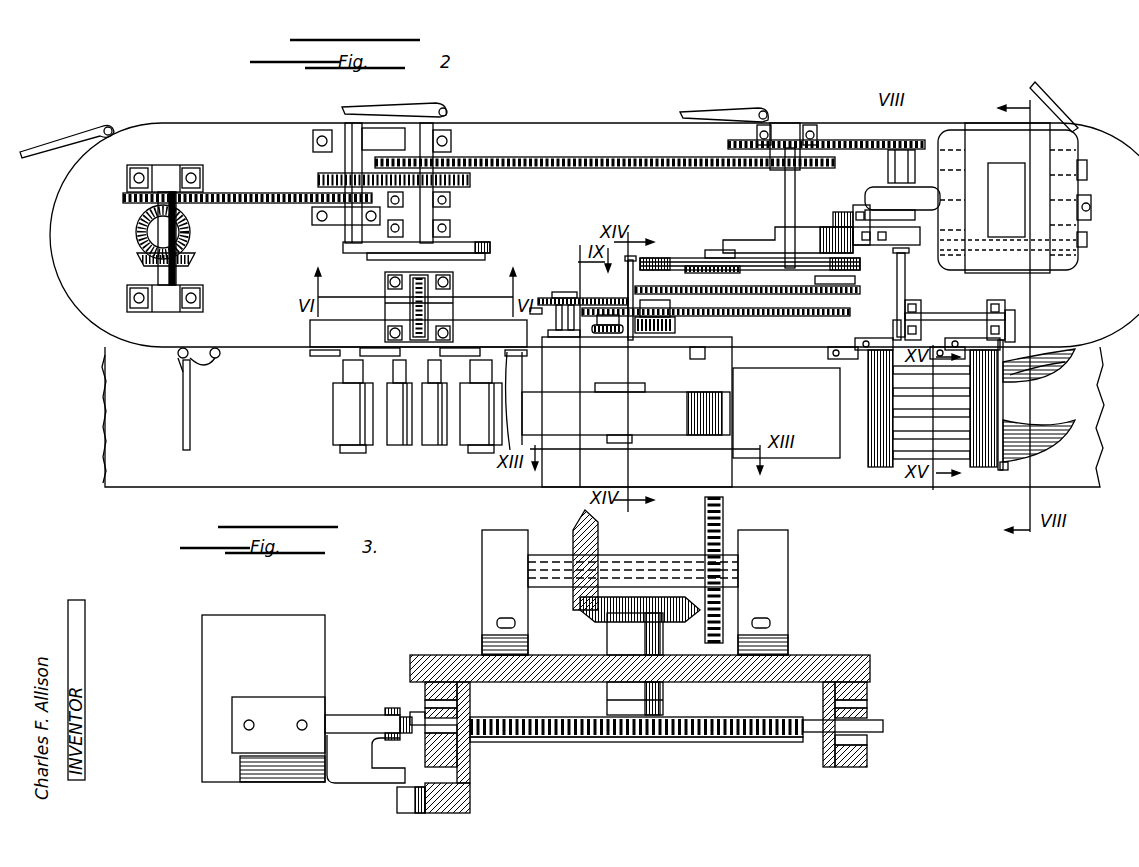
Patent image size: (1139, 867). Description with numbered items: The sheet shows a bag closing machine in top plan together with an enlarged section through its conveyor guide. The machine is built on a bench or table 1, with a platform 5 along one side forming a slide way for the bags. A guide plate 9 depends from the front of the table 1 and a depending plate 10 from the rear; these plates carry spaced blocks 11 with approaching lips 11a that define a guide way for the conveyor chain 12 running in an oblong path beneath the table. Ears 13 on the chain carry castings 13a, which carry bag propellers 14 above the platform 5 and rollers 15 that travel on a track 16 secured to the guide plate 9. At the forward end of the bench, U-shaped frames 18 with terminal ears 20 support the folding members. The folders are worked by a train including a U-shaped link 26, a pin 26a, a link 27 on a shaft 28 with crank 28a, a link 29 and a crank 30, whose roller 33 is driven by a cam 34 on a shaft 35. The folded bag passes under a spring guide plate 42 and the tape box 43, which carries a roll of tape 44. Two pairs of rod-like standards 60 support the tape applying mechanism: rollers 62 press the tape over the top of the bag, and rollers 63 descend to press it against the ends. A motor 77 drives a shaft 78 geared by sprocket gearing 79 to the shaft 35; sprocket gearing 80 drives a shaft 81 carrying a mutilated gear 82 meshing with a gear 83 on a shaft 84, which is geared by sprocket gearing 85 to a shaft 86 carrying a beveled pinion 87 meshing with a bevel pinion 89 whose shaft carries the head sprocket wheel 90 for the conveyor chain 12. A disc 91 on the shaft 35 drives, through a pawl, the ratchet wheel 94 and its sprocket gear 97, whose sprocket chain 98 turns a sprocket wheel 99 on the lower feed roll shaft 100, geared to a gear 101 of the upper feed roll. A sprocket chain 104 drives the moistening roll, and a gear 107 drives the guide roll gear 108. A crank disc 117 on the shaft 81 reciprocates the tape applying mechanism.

In FIG. 3, the bench or table 1 is at (870, 658).
In FIG. 2, the platform 5 is at (1095, 362).
In FIG. 3, the guide plate 9 is at (470, 760).
In FIG. 3, the depending plate 10 is at (776, 758).
In FIG. 3, the spaced blocks 11 is at (428, 684).
In FIG. 3, the approaching lips 11a is at (428, 704).
In FIG. 3, the conveyor chain 12 is at (460, 712).
In FIG. 3, the ears 13 is at (392, 714).
In FIG. 3, the castings 13a is at (343, 720).
In FIG. 3, the bag propellers 14 is at (318, 650).
In FIG. 3, the rollers 15 is at (400, 798).
In FIG. 3, the track 16 is at (460, 800).
In FIG. 2, the U-shaped frames 18 is at (880, 470).
In FIG. 2, the terminal ears 20 is at (1055, 375).
In FIG. 2, the U-shaped link 26 is at (1003, 420).
In FIG. 2, the roller pin 26a is at (1005, 465).
In FIG. 2, the link 27 is at (1010, 330).
In FIG. 2, the shaft 28 is at (952, 316).
In FIG. 2, the crank 28a is at (893, 328).
In FIG. 2, the link 29 is at (905, 292).
In FIG. 2, the crank 30 is at (895, 237).
In FIG. 2, the roller 33 is at (842, 212).
In FIG. 2, the cam 34 is at (805, 235).
In FIG. 2, the shaft 35 is at (785, 200).
In FIG. 2, the spring guide plate 42 is at (815, 450).
In FIG. 2, the tape box 43 is at (690, 470).
In FIG. 2, the roll of tape 44 is at (555, 408).
In FIG. 2, the rod-like standards 60 is at (392, 282).
In FIG. 2, the rollers 62 is at (432, 440).
In FIG. 2, the rollers 63 is at (348, 416).
In FIG. 2, the motor 77 is at (988, 140).
In FIG. 2, the shaft 78 is at (912, 165).
In FIG. 2, the sprocket gearing 79 is at (828, 140).
In FIG. 2, the sprocket gearing 80 is at (590, 162).
In FIG. 2, the shaft 81 is at (433, 210).
In FIG. 2, the mutilated gear 82 is at (470, 180).
In FIG. 2, the gear 83 is at (318, 178).
In FIG. 3, the gear 83 is at (723, 518).
In FIG. 2, the shaft 84 is at (345, 140).
In FIG. 2, the chain 85 is at (290, 203).
In FIG. 2, the shaft 86 is at (160, 232).
In FIG. 3, the shaft 86 is at (636, 556).
In FIG. 2, the beveled pinion 87 is at (190, 260).
In FIG. 3, the beveled pinion 87 is at (575, 598).
In FIG. 2, the bevel pinion 89 is at (188, 234).
In FIG. 3, the bevel pinion 89 is at (612, 608).
In FIG. 3, the head sprocket wheel 90 is at (663, 735).
In FIG. 2, the disc 91 is at (752, 262).
In FIG. 2, the ratchet wheel 94 is at (845, 282).
In FIG. 2, the sprocket gear 97 is at (830, 292).
In FIG. 2, the sprocket chain 98 is at (695, 312).
In FIG. 2, the sprocket wheel 99 is at (650, 288).
In FIG. 2, the lower feed roll shaft 100 is at (660, 310).
In FIG. 2, the gear 101 is at (672, 333).
In FIG. 2, the sprocket chain 104 is at (604, 333).
In FIG. 2, the gear 107 is at (603, 298).
In FIG. 2, the gear 108 is at (545, 298).
In FIG. 2, the crank disc 117 is at (490, 246).